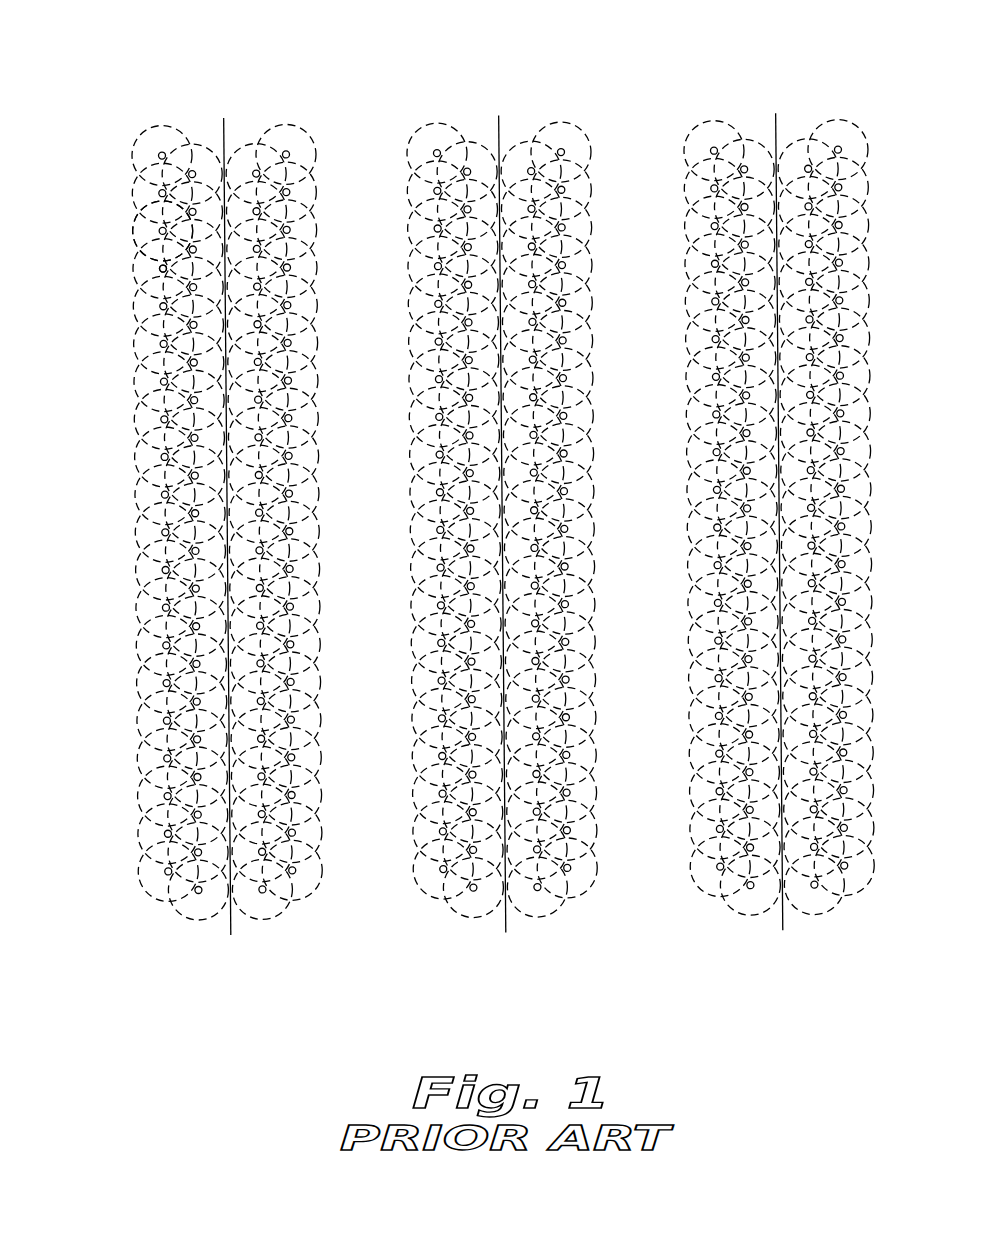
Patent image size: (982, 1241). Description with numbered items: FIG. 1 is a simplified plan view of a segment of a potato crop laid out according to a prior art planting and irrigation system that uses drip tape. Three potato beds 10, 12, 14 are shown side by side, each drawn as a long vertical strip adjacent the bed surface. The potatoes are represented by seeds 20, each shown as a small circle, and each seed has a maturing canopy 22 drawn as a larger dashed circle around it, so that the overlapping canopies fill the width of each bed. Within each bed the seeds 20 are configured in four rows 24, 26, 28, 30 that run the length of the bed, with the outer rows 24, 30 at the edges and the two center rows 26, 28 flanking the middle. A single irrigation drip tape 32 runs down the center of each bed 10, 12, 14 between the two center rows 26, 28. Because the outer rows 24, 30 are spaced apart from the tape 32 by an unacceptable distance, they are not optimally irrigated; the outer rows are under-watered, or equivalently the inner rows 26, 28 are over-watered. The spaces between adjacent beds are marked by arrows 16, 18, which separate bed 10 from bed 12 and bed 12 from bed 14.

The bed 10 is at (221, 522).
The bed 12 is at (588, 102).
The bed 14 is at (865, 102).
The gap between first and second printheads 16 is at (361, 122).
The gap between second and third printheads 18 is at (640, 122).
The seeds 20 is at (159, 269).
The maturing canopy 22 is at (130, 216).
The row 24 is at (114, 555).
The row 26 is at (193, 920).
The row 28 is at (270, 920).
The row 30 is at (303, 905).
The irrigation drip tape 32 is at (230, 935).